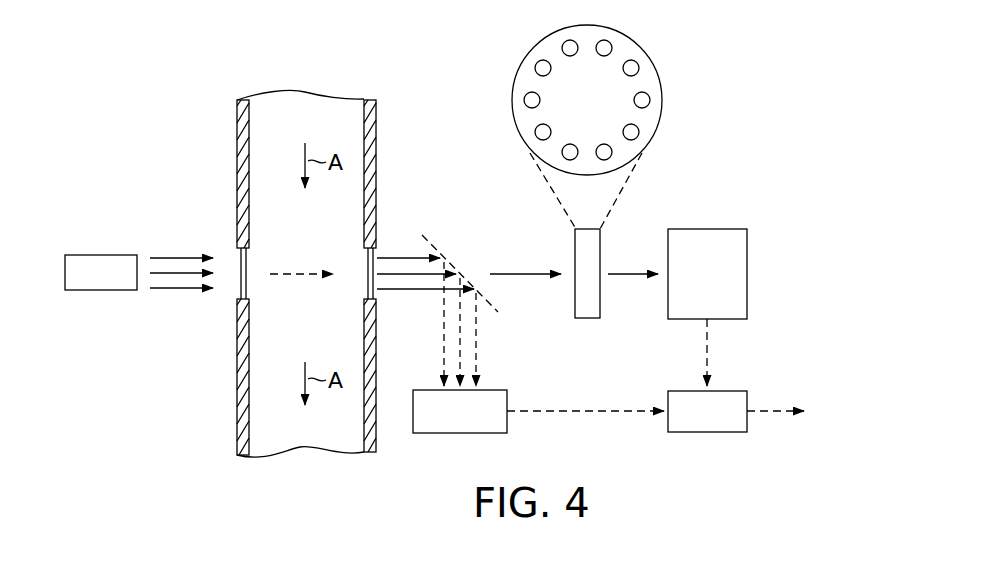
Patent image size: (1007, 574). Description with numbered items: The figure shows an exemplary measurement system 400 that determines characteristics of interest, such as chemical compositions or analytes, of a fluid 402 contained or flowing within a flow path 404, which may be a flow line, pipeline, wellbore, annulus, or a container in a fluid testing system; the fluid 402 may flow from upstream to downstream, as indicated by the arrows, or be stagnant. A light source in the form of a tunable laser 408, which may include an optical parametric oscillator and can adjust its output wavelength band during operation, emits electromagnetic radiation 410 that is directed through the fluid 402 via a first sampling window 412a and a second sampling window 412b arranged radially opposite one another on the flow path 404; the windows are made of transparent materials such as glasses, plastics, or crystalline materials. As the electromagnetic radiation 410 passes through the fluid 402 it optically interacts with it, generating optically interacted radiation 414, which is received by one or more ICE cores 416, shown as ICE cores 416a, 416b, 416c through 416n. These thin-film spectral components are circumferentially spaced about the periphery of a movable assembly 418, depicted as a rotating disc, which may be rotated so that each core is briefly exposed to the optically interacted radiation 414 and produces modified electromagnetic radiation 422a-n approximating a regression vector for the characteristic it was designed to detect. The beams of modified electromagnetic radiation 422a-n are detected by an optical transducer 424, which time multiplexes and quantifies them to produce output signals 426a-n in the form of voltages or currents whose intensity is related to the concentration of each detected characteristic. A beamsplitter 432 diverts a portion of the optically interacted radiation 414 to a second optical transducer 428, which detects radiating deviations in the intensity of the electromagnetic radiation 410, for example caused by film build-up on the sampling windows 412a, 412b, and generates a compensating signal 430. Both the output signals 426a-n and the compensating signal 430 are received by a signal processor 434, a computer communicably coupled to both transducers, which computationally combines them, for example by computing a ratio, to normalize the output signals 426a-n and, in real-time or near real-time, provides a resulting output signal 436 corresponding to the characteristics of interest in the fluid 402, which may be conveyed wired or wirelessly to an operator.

The measurement system 400 is at (116, 97).
The fluid 402 is at (323, 246).
The flow path 404 is at (377, 122).
The tunable laser 408 is at (118, 285).
The electromagnetic radiation 410 is at (180, 255).
The first sampling window 412a is at (238, 299).
The second sampling window 412b is at (375, 298).
The optically interacted radiation 414 is at (400, 256).
The ICE cores 416 is at (596, 200).
The ICE core 416a is at (612, 48).
The ICE core 416b is at (641, 68).
The ICE core 416c is at (651, 99).
The ICE core 416n is at (536, 63).
The movable assembly 418 is at (512, 104).
The modified electromagnetic radiation 422a-n is at (627, 270).
The optical transducer 424 is at (726, 286).
The output signals 426a-n is at (710, 348).
The second optical transducer 428 is at (479, 422).
The compensating signal 430 is at (540, 412).
The beamsplitter 432 is at (430, 232).
The signal processor 434 is at (726, 422).
The resulting output signal 436 is at (776, 410).